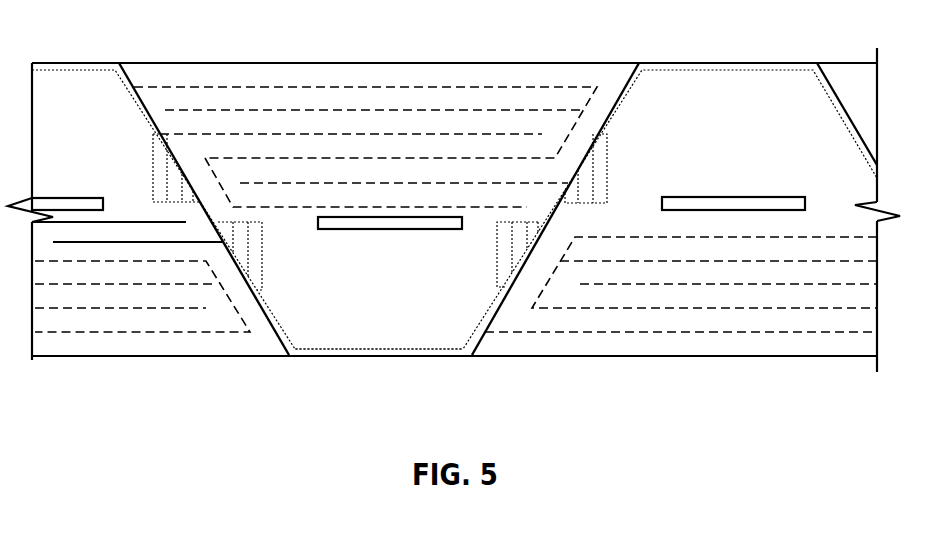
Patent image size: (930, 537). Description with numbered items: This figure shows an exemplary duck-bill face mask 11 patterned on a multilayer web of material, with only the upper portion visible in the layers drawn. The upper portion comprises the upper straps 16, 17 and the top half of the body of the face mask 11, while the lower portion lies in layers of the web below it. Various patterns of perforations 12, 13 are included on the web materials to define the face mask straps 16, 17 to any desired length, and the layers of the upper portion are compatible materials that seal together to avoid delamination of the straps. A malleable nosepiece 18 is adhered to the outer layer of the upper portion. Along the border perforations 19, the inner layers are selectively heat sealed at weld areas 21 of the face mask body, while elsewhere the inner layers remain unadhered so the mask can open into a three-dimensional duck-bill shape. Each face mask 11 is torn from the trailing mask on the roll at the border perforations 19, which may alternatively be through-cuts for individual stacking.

The duck-bill face mask 11 is at (58, 112).
The perforations 12 is at (445, 87).
The perforations 13 is at (340, 134).
The upper strap 16 is at (535, 78).
The upper strap 17 is at (160, 112).
The malleable nosepiece 18 is at (462, 230).
The border perforations 19 is at (277, 332).
The weld areas 21 is at (335, 350).